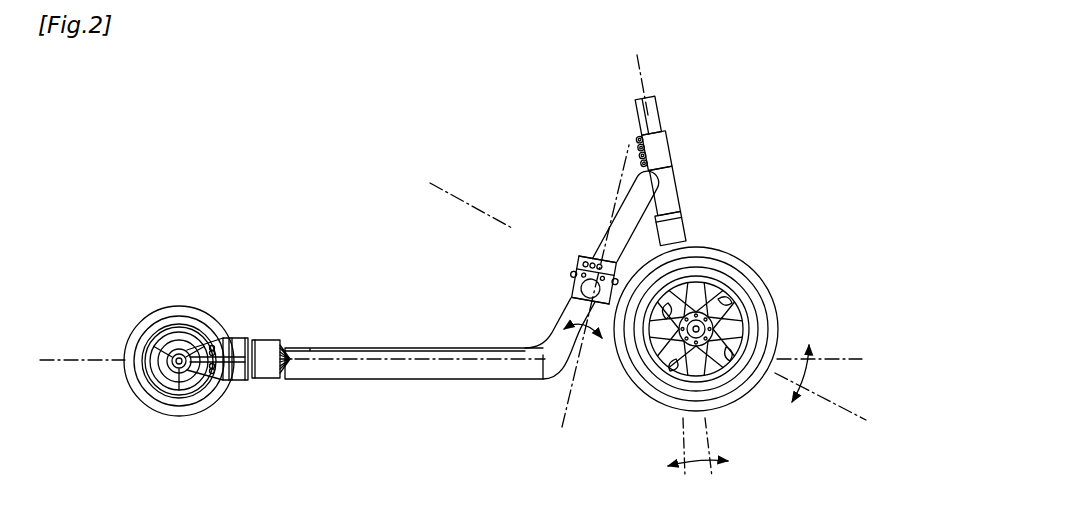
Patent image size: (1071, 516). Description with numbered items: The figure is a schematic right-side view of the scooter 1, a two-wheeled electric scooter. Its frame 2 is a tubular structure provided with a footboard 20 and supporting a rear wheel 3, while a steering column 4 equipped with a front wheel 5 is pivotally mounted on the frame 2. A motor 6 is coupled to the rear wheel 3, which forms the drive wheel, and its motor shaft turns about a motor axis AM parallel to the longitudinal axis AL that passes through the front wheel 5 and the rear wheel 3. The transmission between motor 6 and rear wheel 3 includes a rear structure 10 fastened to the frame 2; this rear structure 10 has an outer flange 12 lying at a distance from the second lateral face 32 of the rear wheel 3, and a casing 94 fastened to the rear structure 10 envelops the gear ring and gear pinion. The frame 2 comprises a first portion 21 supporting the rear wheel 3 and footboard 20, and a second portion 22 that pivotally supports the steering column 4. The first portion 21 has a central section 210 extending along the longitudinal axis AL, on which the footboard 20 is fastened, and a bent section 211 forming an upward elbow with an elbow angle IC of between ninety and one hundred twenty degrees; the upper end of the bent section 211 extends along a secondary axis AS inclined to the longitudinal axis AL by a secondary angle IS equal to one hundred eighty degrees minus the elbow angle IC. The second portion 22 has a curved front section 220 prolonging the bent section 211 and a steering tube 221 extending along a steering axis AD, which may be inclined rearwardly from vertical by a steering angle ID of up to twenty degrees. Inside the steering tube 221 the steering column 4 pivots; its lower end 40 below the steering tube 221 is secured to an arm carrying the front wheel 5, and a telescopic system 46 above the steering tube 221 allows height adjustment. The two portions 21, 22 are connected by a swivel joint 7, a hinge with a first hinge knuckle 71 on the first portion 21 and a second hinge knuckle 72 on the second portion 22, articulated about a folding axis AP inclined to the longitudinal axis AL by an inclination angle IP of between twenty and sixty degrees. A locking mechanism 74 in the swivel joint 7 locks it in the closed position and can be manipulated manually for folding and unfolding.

The scooter 1 is at (300, 145).
The frame 2 is at (446, 322).
The rear wheel 3 is at (152, 300).
The steering column 4 is at (667, 108).
The front wheel 5 is at (770, 273).
The motor 6 is at (267, 378).
The swivel joint 7 is at (576, 275).
The rear structure 10 is at (238, 384).
The outer flange 12 is at (221, 378).
The footboard 20 is at (418, 347).
The first portion 21 is at (455, 382).
The second portion 22 is at (626, 190).
The second lateral face 32 is at (160, 396).
The lower end 40 is at (670, 228).
The telescopic system 46 is at (654, 151).
The first hinge knuckle 71 is at (585, 289).
The second hinge knuckle 72 is at (586, 262).
The locking mechanism 74 is at (568, 306).
The casing 94 is at (155, 346).
The central section 210 is at (436, 370).
The bent section 211 is at (556, 370).
The front section 220 is at (608, 232).
The steering tube 221 is at (664, 190).
The steering axis AD is at (647, 62).
The longitudinal axis AL is at (855, 359).
The motor axis AM is at (375, 354).
The folding axis AP is at (857, 420).
The secondary axis AS is at (568, 428).
The elbow angle IC is at (528, 346).
The steering angle ID is at (698, 457).
The inclination angle IP is at (812, 373).
The secondary angle IS is at (595, 286).